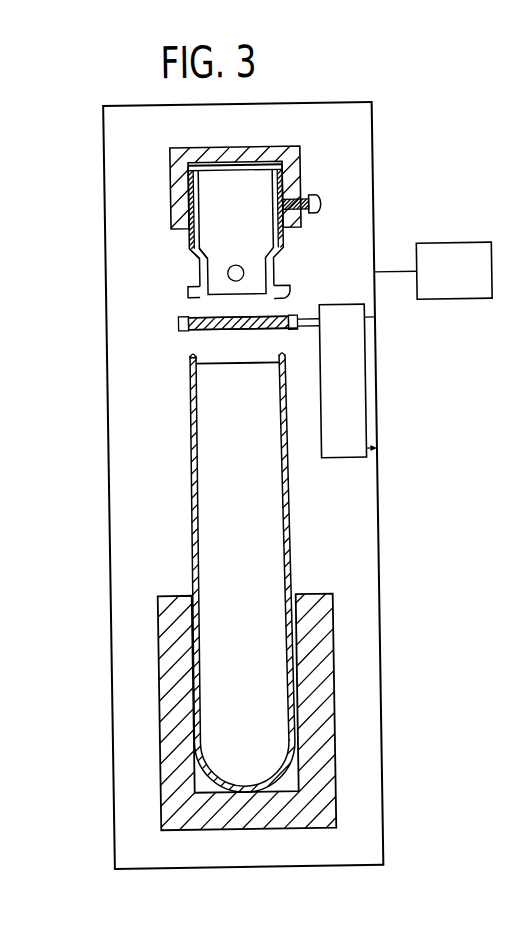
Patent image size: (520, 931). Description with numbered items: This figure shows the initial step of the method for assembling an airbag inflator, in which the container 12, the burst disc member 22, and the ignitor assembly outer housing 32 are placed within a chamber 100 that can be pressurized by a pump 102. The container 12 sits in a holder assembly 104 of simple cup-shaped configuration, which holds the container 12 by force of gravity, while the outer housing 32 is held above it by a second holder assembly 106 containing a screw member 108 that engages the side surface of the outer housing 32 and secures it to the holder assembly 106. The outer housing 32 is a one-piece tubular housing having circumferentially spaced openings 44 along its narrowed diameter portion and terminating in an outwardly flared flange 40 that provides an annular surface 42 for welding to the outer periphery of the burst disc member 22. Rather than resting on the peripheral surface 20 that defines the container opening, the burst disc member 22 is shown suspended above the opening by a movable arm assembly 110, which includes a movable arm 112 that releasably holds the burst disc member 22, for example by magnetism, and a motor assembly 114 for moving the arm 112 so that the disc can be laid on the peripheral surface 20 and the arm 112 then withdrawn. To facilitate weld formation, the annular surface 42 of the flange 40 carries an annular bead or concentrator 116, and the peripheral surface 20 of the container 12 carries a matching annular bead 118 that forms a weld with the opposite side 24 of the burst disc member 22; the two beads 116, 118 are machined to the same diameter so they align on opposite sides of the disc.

The container 12 is at (296, 516).
The peripheral surface 20 is at (192, 358).
The burst disc member 22 is at (196, 338).
The opposite side 24 is at (258, 334).
The outer housing 32 is at (292, 247).
The outwardly flared flange 40 is at (190, 288).
The annular surface 42 is at (290, 299).
The circumferentially spaced openings 44 is at (244, 266).
The chamber 100 is at (378, 158).
The pump 102 is at (446, 246).
The holder assembly 104 is at (325, 698).
The holder assembly 106 is at (176, 180).
The screw member 108 is at (320, 196).
The movable arm assembly 110 is at (345, 302).
The movable arm 112 is at (181, 318).
The motor assembly 114 is at (356, 392).
The annular bead 116 is at (191, 297).
The annular bead 118 is at (201, 357).